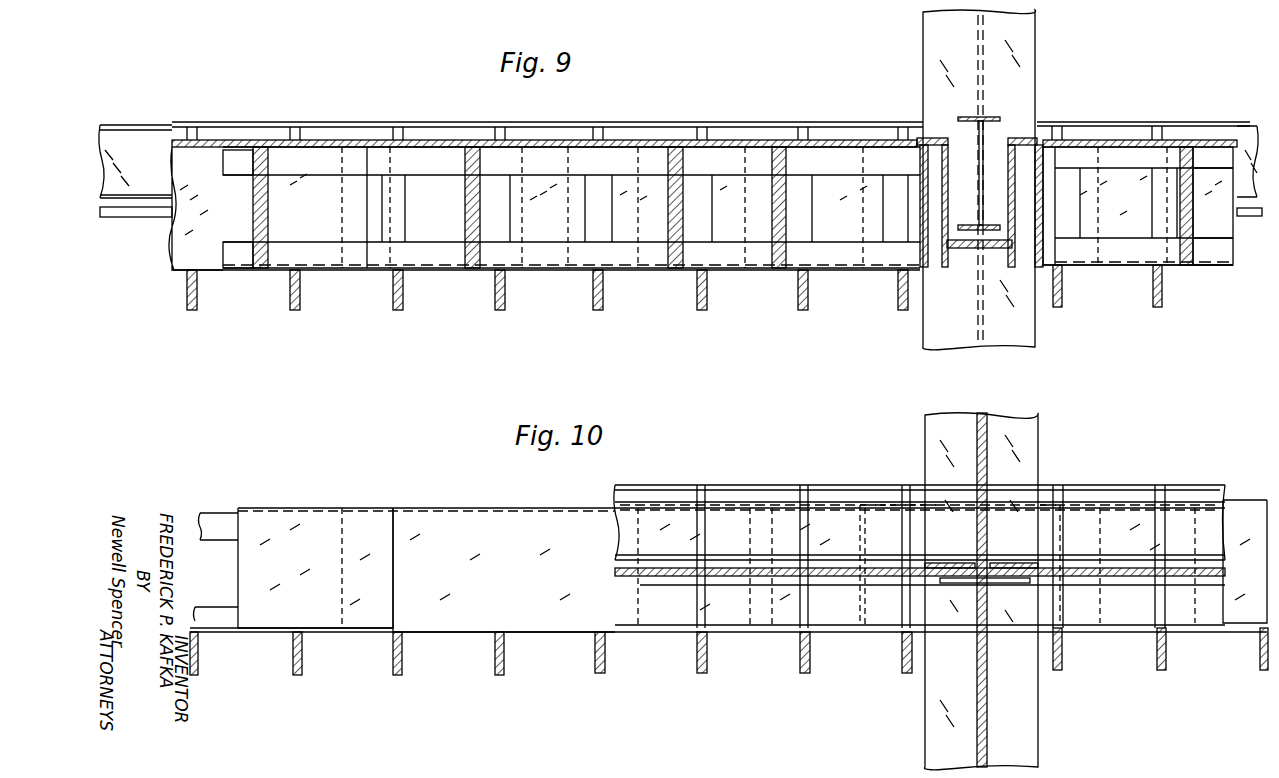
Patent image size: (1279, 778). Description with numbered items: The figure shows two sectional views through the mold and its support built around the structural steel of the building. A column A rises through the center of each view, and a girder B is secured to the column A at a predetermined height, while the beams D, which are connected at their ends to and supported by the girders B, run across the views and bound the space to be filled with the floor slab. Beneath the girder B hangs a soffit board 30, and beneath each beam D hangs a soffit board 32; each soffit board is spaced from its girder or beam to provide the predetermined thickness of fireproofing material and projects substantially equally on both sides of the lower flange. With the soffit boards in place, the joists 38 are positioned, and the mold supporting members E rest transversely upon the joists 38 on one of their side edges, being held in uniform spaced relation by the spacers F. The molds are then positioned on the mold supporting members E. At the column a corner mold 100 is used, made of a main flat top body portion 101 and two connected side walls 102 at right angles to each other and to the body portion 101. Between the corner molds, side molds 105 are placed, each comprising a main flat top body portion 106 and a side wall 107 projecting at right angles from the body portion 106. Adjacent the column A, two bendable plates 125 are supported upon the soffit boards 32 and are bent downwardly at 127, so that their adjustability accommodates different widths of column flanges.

In FIG. 9, the column A is at (1030, 40).
In FIG. 10, the column A is at (965, 418).
In FIG. 9, the girder B is at (1010, 140).
In FIG. 9, the beam D is at (752, 122).
In FIG. 10, the beam D is at (682, 485).
In FIG. 9, the mold supporting member E is at (246, 266).
In FIG. 10, the mold supporting member E is at (224, 630).
In FIG. 9, the spacer F is at (268, 205).
In FIG. 9, the soffit board 30 is at (968, 250).
In FIG. 9, the soffit board 32 is at (137, 217).
In FIG. 10, the soffit board 32 is at (736, 578).
In FIG. 9, the joist 38 is at (393, 305).
In FIG. 10, the joist 38 is at (595, 670).
In FIG. 9, the corner mold 100 is at (911, 166).
In FIG. 10, the corner mold 100 is at (882, 495).
In FIG. 9, the main flat top body portion 101 is at (1075, 147).
In FIG. 10, the main flat top body portion 101 is at (890, 502).
In FIG. 9, the side wall 102 is at (905, 200).
In FIG. 10, the side wall 102 is at (872, 615).
In FIG. 9, the side mold 105 is at (431, 134).
In FIG. 10, the side mold 105 is at (419, 500).
In FIG. 9, the main flat top body portion 106 is at (250, 140).
In FIG. 10, the main flat top body portion 106 is at (292, 508).
In FIG. 9, the side wall 107 is at (182, 250).
In FIG. 10, the side wall 107 is at (1236, 615).
In FIG. 10, the plate 125 is at (992, 563).
In FIG. 10, the downwardly bent portion 127 is at (1004, 585).